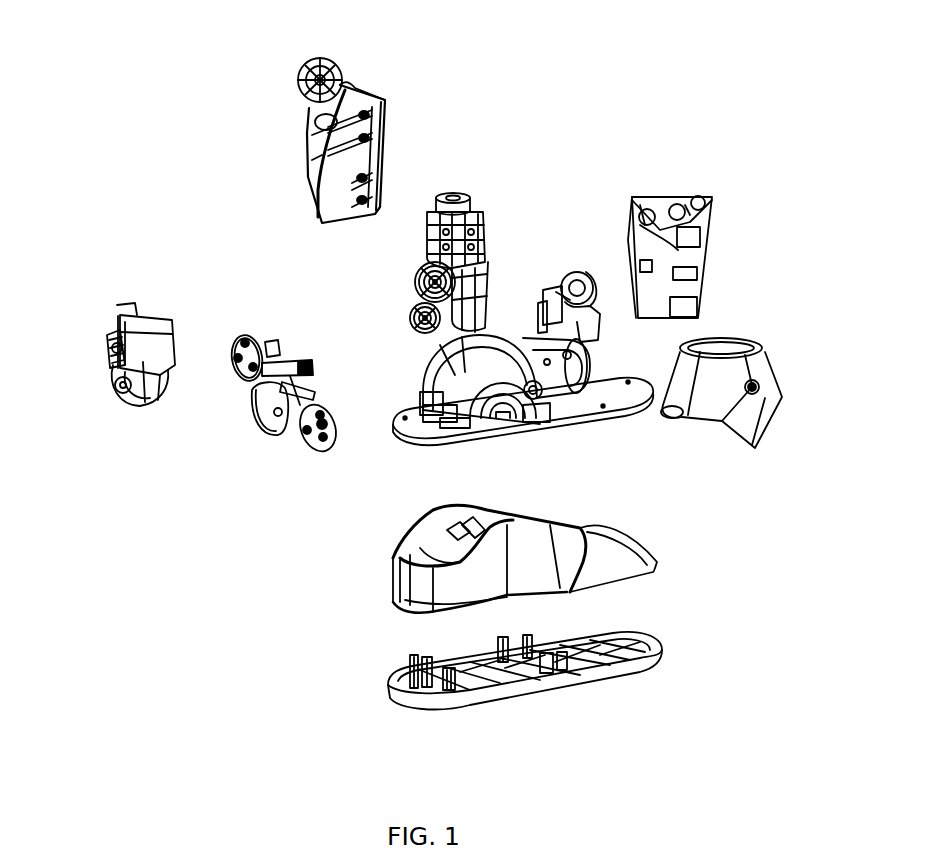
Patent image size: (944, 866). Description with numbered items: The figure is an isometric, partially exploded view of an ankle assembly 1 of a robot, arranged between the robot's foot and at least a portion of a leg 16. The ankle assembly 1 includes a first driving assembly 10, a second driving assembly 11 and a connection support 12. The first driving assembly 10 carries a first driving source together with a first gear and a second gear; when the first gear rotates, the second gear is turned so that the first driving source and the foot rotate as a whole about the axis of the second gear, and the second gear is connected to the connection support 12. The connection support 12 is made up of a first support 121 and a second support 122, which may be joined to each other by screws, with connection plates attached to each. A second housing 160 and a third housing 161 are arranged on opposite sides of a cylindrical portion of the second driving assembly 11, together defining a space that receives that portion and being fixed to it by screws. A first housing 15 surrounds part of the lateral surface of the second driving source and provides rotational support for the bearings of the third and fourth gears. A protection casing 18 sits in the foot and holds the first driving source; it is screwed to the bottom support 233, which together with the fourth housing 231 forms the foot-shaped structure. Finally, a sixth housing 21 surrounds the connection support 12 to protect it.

The ankle assembly 1 is at (200, 157).
The leg 16 is at (602, 56).
The second housing 160 is at (388, 132).
The third housing 161 is at (628, 214).
The second driving assembly 11 is at (432, 258).
The second support 122 is at (575, 268).
The protection casing 18 is at (430, 372).
The first driving assembly 10 is at (598, 412).
The first housing 15 is at (108, 360).
The first support 121 is at (250, 383).
The connection support 12 is at (613, 382).
The sixth housing 21 is at (783, 408).
The fourth housing 231 is at (660, 568).
The bottom support 233 is at (660, 657).